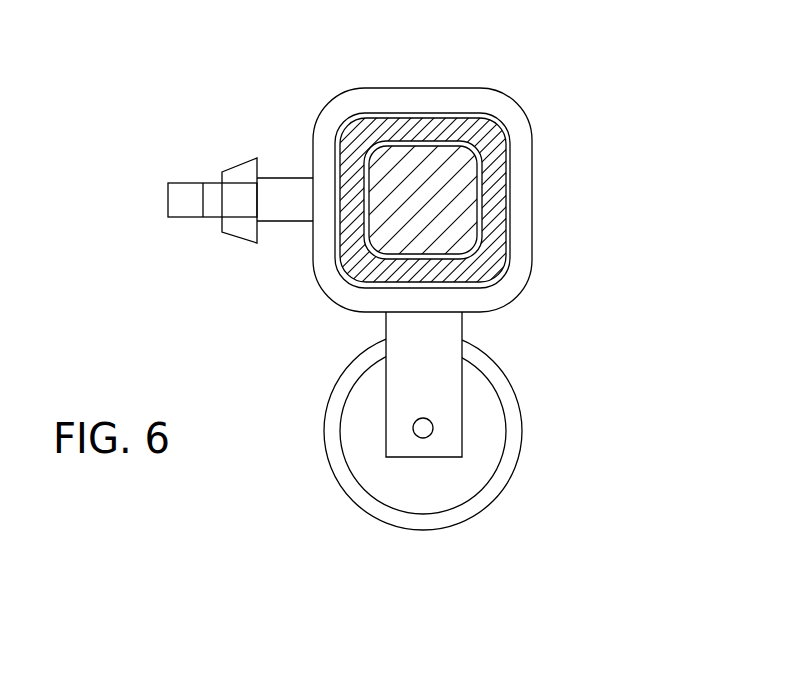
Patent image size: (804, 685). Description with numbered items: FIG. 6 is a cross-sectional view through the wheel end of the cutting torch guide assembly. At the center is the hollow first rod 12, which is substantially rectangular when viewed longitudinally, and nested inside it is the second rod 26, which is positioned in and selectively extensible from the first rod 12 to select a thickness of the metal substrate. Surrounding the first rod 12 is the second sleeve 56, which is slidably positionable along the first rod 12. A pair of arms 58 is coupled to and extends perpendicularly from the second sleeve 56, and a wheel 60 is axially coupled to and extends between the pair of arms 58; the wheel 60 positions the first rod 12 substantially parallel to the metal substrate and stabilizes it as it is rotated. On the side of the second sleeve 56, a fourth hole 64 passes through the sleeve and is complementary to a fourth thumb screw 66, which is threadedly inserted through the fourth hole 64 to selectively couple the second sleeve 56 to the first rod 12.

The first rod 12 is at (482, 153).
The second rod 26 is at (430, 163).
The second sleeve 56 is at (527, 185).
The pair of arms 58 is at (437, 355).
The wheel 60 is at (510, 432).
The fourth hole 64 is at (325, 205).
The fourth thumb screw 66 is at (287, 193).